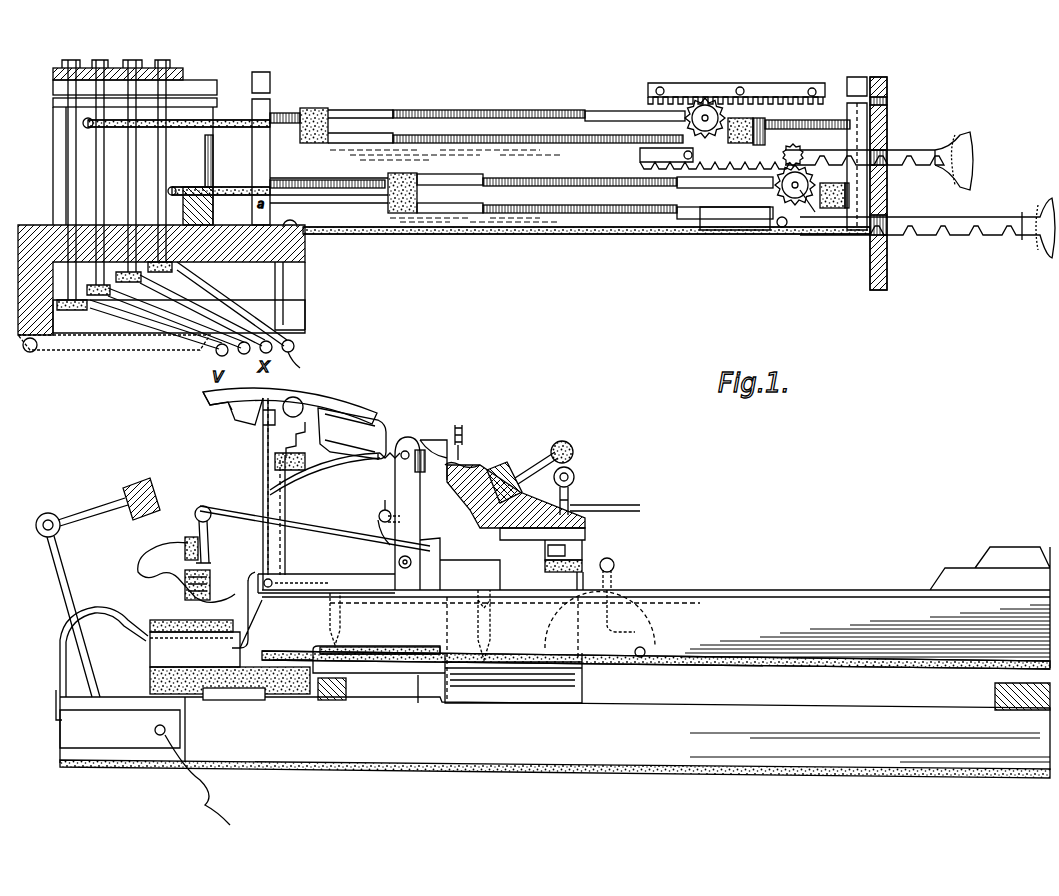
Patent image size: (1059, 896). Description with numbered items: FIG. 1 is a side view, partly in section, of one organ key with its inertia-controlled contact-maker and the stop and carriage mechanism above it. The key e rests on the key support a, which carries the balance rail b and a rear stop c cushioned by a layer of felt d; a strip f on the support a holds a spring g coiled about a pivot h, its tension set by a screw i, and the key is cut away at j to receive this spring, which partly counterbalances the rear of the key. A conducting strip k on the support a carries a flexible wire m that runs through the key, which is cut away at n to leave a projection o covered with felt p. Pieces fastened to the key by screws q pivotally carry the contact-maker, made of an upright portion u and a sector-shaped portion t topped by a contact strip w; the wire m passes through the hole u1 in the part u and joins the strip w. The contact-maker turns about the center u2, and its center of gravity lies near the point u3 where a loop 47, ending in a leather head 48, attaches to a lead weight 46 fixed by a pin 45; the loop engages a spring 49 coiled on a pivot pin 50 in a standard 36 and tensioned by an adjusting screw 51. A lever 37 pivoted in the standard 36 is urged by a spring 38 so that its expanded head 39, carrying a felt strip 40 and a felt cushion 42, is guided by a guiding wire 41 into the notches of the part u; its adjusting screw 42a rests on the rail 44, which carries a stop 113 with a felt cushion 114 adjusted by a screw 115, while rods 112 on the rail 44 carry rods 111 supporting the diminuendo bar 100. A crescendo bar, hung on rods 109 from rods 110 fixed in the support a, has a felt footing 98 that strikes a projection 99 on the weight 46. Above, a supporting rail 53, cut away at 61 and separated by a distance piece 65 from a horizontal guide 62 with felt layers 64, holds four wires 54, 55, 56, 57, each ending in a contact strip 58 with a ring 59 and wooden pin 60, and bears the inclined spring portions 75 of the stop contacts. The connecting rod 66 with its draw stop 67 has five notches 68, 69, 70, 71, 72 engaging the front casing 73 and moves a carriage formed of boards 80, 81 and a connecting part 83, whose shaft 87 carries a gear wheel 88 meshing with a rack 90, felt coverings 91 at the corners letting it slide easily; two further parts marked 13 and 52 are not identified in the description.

The support for the keys a is at (678, 772).
The balance rail b is at (985, 686).
The rear stop c is at (250, 688).
The layer of felt d is at (195, 692).
The key e is at (768, 590).
The strip f is at (335, 700).
The spring g is at (420, 703).
The pivot h is at (648, 648).
The screw i is at (618, 580).
The cut-away of key j is at (565, 650).
The conducting strip k is at (140, 745).
The flexible wire m is at (58, 660).
The cut-away at rear of key n is at (300, 610).
The projecting portion o is at (195, 643).
The felt p is at (150, 632).
The screws q is at (492, 624).
The sector-shaped portion t is at (290, 409).
The upright portion u is at (263, 488).
The hole u1 is at (288, 552).
The center u2 is at (326, 583).
The point of attachment u3 is at (330, 593).
The contact strip w is at (375, 410).
The block 13 is at (480, 482).
The upright standard 36 is at (470, 462).
The lever 37 is at (445, 440).
The spring 38 is at (415, 480).
The expanded head 39 is at (268, 448).
The felt strip 40 is at (275, 463).
The guiding wire 41 is at (382, 425).
The felt cushion 42 is at (312, 468).
The adjusting screw 42a is at (462, 432).
The rail 44 is at (570, 500).
The pin 45 is at (252, 558).
The weight 46 is at (148, 572).
The loop 47 is at (200, 515).
The leather head 48 is at (185, 580).
The spring 49 is at (285, 528).
The pivot pin 50 is at (440, 545).
The adjusting screw 51 is at (378, 518).
The block 52 is at (192, 590).
The supporting rail 53 is at (207, 203).
The wire 54 is at (70, 195).
The wire 55 is at (98, 165).
The wire 56 is at (134, 154).
The wire 57 is at (165, 128).
The contact strip 58 is at (240, 325).
The ring 59 is at (295, 348).
The wooden pin 60 is at (304, 367).
The cut-away 61 is at (232, 303).
The horizontal guide 62 is at (128, 350).
The layers of felt 64 is at (270, 320).
The distance piece 65 is at (306, 270).
The connecting rod 66 is at (985, 215).
The draw stop 67 is at (1048, 258).
The notch 68 is at (862, 232).
The notch 69 is at (905, 237).
The notch 70 is at (935, 233).
The notch 71 is at (965, 236).
The notch 72 is at (993, 234).
The front casing 73 is at (880, 292).
The spring contact wire portion 75 is at (240, 127).
The horizontal board 80 is at (385, 110).
The board 81 is at (580, 112).
The connecting part 83 is at (470, 112).
The shaft 87 is at (705, 110).
The gear wheel 88 is at (650, 100).
The rack 90 is at (780, 97).
The felt covering 91 is at (378, 100).
The felt footing 98 is at (170, 548).
The projection 99 is at (142, 555).
The bar 100 is at (562, 460).
The rod 109 is at (100, 515).
The rod 110 is at (55, 562).
The rod 111 is at (575, 455).
The rod 112 is at (576, 476).
The stop 113 is at (584, 534).
The felt cushion 114 is at (584, 560).
The screw 115 is at (629, 505).